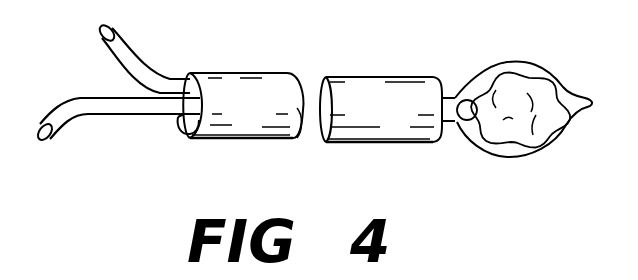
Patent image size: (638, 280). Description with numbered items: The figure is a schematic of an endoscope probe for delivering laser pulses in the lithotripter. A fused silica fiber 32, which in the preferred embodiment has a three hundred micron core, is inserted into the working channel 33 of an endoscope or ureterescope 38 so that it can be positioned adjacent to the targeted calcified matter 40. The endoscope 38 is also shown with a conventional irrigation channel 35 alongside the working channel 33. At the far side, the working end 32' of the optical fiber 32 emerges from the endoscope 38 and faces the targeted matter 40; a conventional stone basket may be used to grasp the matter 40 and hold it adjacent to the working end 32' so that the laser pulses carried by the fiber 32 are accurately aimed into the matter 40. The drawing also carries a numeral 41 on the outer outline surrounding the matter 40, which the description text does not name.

The fused silica fiber 32 is at (117, 132).
The irrigation channel 35 is at (133, 65).
The working channel 33 is at (185, 125).
The endoscope 38 is at (252, 82).
The working end 32' is at (398, 85).
The balloon outer wall 41 is at (553, 75).
The targeted calcified matter 40 is at (522, 133).